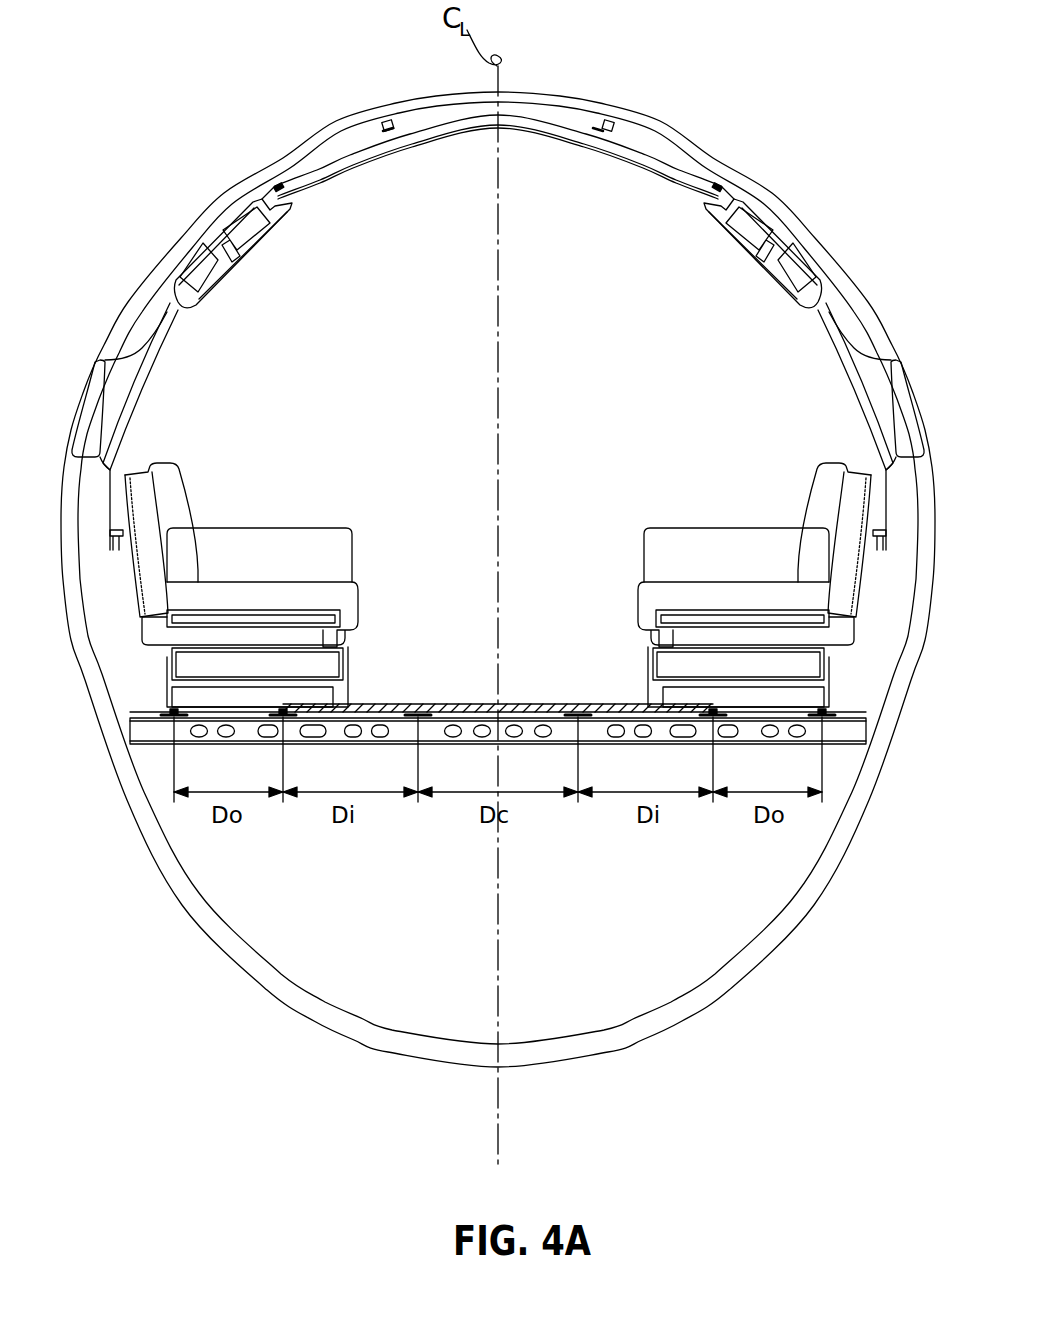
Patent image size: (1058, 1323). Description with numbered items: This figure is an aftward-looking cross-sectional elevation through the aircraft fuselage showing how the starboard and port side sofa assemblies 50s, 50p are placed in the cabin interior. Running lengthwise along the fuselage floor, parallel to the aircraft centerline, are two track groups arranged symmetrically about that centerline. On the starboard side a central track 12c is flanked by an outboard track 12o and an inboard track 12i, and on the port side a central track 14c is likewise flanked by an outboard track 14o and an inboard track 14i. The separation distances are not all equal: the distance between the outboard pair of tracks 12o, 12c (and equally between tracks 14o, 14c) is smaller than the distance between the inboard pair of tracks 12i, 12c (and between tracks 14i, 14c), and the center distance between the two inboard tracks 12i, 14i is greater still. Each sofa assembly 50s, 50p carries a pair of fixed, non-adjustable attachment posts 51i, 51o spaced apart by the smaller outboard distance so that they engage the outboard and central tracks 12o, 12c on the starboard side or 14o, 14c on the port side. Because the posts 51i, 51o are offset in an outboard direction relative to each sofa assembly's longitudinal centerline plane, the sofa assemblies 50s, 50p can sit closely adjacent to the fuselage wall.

The starboard side sofa assembly 50s is at (315, 575).
The port side sofa assembly 50p is at (709, 579).
The outboard starboard track 12o is at (175, 717).
The central starboard track 12c is at (288, 714).
The inboard starboard track 12i is at (418, 713).
The outboard port track 14o is at (828, 718).
The central port track 14c is at (714, 714).
The inboard port track 14i is at (578, 713).
The outboard fixed attachment post 51o is at (172, 713).
The inboard fixed attachment post 51i is at (285, 713).